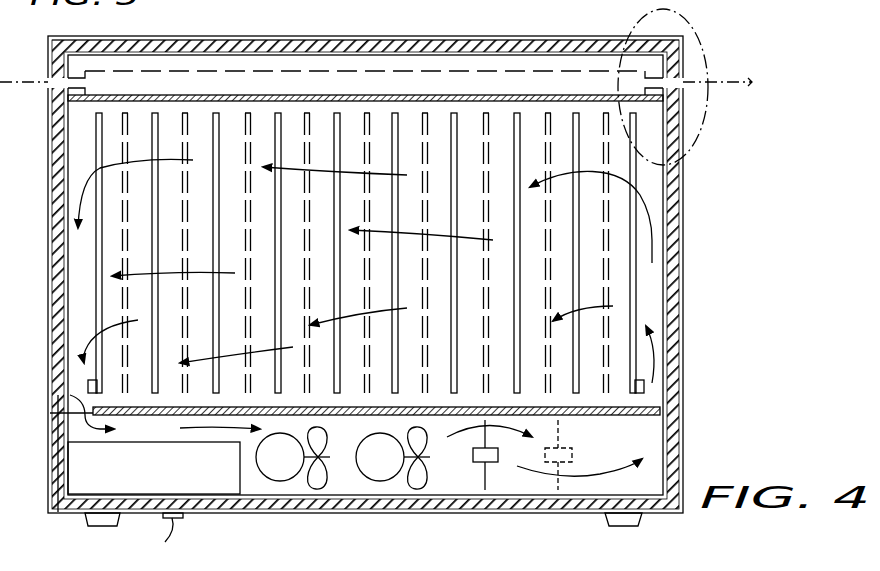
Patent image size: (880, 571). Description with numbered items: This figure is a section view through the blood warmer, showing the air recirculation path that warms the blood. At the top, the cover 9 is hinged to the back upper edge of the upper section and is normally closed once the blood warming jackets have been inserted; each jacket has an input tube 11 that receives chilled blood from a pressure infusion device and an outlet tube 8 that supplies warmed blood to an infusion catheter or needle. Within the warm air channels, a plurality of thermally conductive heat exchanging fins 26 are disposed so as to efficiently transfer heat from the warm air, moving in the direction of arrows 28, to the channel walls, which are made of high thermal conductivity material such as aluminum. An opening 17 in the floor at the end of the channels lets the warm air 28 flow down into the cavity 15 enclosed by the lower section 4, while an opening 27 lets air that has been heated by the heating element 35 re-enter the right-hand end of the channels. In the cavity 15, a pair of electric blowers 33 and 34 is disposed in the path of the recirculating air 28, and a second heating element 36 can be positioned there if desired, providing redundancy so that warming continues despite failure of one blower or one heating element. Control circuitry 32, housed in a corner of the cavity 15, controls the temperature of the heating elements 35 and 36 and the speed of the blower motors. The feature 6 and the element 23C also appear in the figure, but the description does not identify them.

The lower section 4 is at (684, 476).
The lamp end detail region 6 is at (690, 128).
The outlet tube 8 is at (14, 81).
The cover 9 is at (420, 38).
The input tube 11 is at (725, 80).
The cavity 15 is at (356, 444).
The opening 17 is at (68, 399).
The duct plate 23C is at (433, 97).
The heat exchanging fins 26 is at (337, 151).
The opening 27 is at (655, 408).
The arrows 28 is at (72, 165).
The control circuitry 32 is at (82, 468).
The electric blower 33 is at (279, 481).
The electric blower 34 is at (383, 481).
The heating element 35 is at (498, 464).
The second heating element 36 is at (566, 449).